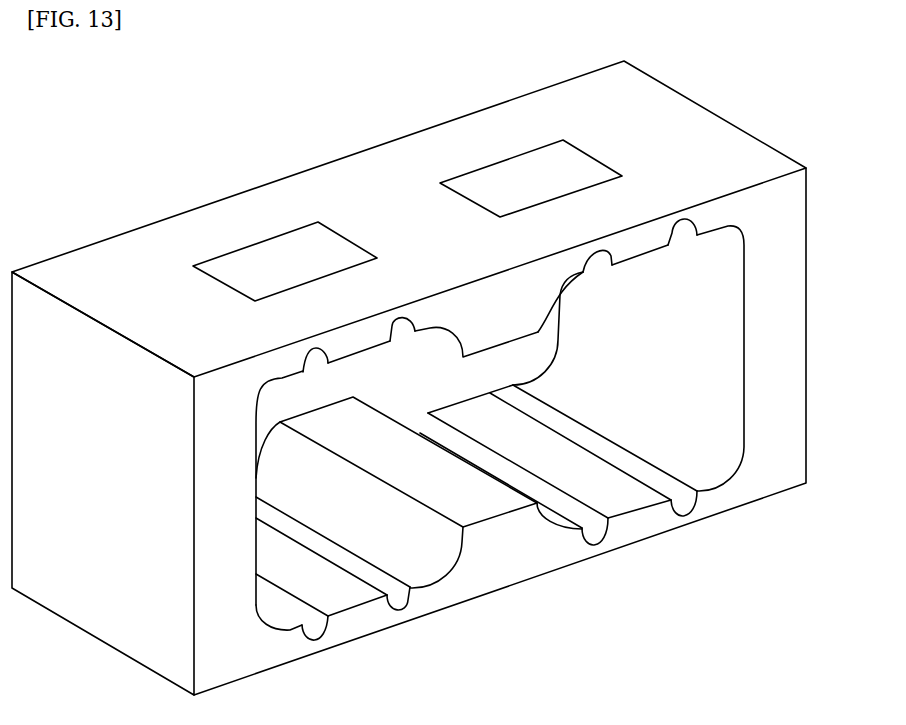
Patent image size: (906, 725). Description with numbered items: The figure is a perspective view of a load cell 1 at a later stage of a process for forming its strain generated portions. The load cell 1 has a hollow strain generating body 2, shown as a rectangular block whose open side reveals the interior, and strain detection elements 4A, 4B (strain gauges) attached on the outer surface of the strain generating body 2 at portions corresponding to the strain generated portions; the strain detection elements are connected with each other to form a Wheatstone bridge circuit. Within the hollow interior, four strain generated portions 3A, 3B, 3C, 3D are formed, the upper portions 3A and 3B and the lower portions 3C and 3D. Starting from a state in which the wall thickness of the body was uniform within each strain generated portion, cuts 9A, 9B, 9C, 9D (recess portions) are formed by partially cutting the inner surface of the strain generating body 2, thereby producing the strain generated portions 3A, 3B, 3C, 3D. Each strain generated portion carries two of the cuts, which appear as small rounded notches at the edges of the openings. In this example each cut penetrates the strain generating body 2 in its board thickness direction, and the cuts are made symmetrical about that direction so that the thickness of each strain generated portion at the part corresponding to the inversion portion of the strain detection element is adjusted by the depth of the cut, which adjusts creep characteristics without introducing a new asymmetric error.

The load cell 1 is at (47, 129).
The strain generating body 2 is at (386, 176).
The strain generated portion 3A is at (396, 385).
The strain generated portion 3B is at (670, 298).
The strain generated portion 3C is at (415, 553).
The strain generated portion 3D is at (715, 467).
The strain detection element 4A is at (272, 238).
The strain detection element 4B is at (518, 165).
The cut 9A is at (317, 348).
The cut 9B is at (603, 250).
The cut 9C is at (306, 648).
The cut 9D is at (595, 556).